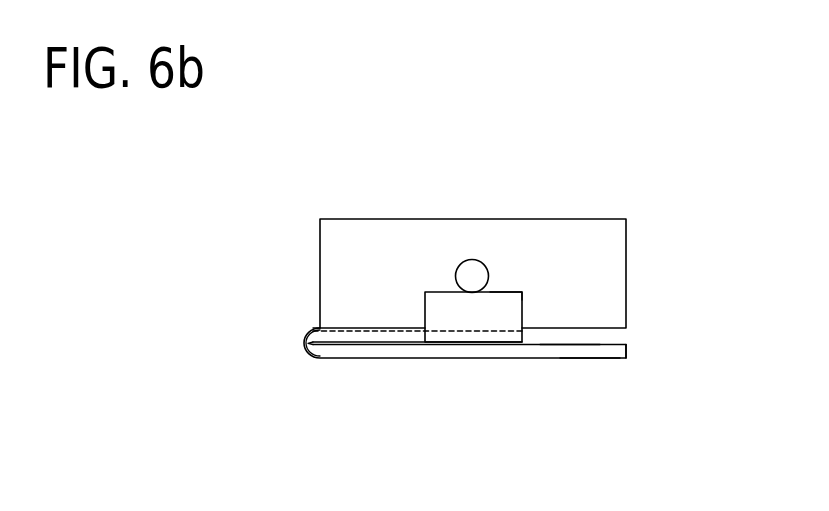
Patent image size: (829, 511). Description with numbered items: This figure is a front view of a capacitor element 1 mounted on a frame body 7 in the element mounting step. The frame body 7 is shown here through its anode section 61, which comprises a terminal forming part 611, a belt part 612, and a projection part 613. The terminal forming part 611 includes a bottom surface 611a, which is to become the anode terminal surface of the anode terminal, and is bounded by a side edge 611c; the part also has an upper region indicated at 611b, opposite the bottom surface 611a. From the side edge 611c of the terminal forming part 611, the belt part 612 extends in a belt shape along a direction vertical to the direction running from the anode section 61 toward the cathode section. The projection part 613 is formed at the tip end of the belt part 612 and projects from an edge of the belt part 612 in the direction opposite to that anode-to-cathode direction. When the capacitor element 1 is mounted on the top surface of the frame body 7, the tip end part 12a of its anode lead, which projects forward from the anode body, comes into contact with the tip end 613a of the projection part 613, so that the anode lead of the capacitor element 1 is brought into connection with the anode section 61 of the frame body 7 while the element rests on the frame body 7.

The capacitor element 1 is at (576, 219).
The tip end part 12a is at (473, 259).
The frame body 7 is at (630, 345).
The anode section 61 is at (478, 354).
The terminal forming part 611 is at (478, 358).
The bottom surface 611a is at (588, 359).
The upper surface of substrate 611b is at (573, 344).
The side edge 611c is at (307, 352).
The belt part 612 is at (420, 334).
The projection part 613 is at (490, 334).
The tip end 613a is at (503, 292).